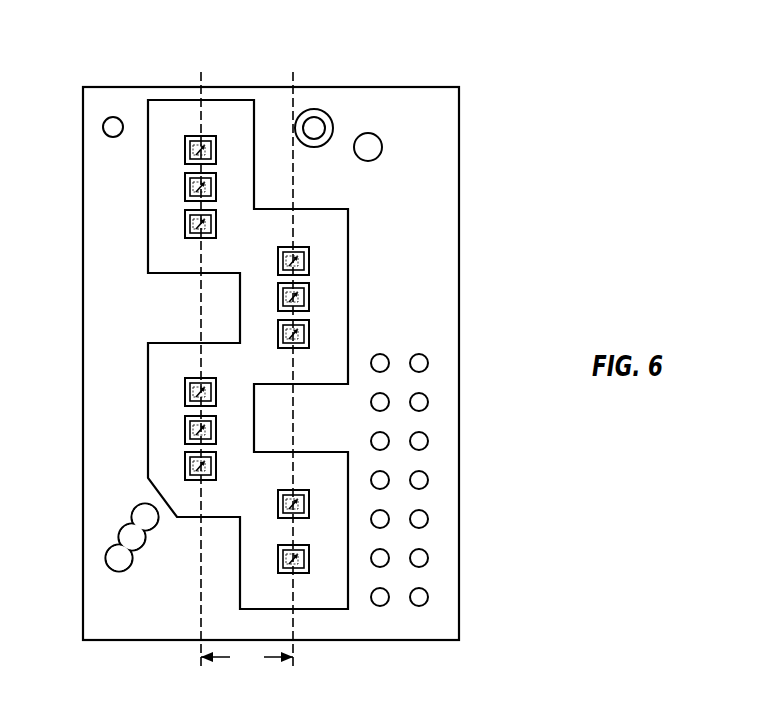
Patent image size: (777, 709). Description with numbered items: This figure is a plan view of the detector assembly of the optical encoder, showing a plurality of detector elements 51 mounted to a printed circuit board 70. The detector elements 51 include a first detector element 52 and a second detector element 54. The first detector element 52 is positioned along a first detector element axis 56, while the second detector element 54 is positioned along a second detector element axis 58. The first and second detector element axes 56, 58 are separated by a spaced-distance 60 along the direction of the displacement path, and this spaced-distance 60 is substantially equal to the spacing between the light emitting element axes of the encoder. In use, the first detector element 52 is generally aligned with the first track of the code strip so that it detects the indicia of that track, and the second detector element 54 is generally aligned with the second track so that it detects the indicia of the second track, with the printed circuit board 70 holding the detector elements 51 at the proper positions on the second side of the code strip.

The printed circuit board 70 is at (393, 86).
The detector elements 51 is at (185, 187).
The first detector element 52 is at (185, 148).
The second detector element 54 is at (310, 260).
The first detector element axis 56 is at (201, 623).
The second detector element axis 58 is at (293, 623).
The spaced-distance 60 is at (247, 657).